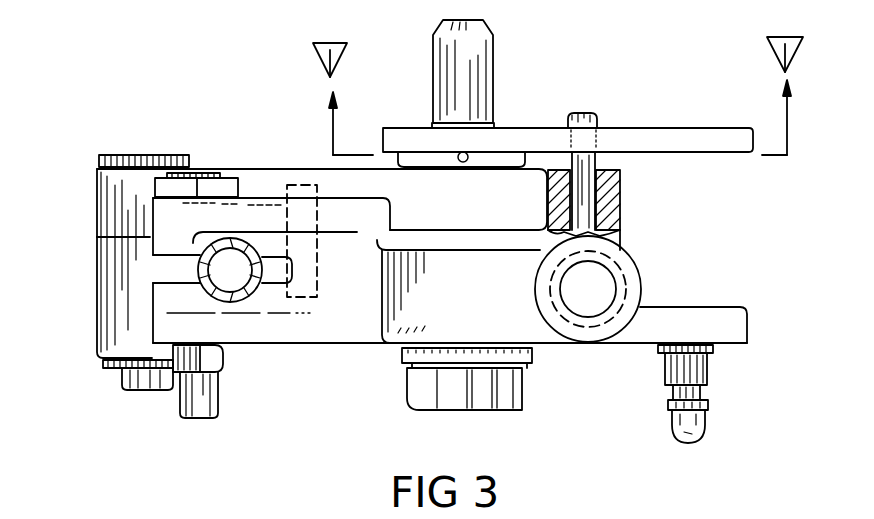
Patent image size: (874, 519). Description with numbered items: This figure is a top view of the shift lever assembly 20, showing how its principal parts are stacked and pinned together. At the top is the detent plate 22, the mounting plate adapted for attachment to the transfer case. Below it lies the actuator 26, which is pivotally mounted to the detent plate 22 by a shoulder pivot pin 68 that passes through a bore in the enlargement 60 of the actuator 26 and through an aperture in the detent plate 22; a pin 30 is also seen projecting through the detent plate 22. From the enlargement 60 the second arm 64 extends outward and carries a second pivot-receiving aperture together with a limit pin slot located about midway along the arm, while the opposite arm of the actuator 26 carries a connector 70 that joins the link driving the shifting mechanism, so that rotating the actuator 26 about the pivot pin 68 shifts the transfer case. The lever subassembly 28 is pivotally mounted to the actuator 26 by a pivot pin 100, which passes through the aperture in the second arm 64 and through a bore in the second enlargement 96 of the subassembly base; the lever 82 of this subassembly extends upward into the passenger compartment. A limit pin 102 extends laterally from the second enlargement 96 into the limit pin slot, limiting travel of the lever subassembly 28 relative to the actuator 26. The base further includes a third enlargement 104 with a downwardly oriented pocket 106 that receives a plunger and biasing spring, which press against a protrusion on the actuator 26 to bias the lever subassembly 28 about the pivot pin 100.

The shift lever assembly 20 is at (588, 30).
The detent plate 22 is at (669, 120).
The actuator 26 is at (552, 358).
The lever subassembly 28 is at (310, 358).
The pin 30 is at (594, 114).
The enlargement 60 is at (491, 316).
The second arm 64 is at (97, 192).
The shoulder pivot pin 68 is at (493, 50).
The connector 70 is at (706, 428).
The lever 82 is at (198, 271).
The second enlargement 96 is at (97, 293).
The pivot pin 100 is at (215, 362).
The limit pin 102 is at (297, 170).
The third enlargement 104 is at (641, 278).
The pocket 106 is at (620, 250).